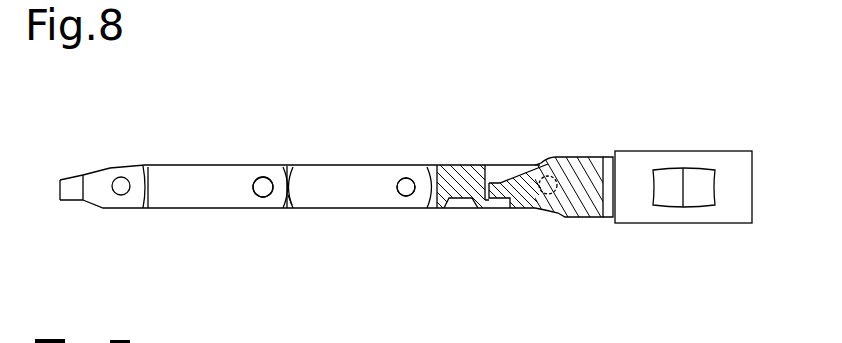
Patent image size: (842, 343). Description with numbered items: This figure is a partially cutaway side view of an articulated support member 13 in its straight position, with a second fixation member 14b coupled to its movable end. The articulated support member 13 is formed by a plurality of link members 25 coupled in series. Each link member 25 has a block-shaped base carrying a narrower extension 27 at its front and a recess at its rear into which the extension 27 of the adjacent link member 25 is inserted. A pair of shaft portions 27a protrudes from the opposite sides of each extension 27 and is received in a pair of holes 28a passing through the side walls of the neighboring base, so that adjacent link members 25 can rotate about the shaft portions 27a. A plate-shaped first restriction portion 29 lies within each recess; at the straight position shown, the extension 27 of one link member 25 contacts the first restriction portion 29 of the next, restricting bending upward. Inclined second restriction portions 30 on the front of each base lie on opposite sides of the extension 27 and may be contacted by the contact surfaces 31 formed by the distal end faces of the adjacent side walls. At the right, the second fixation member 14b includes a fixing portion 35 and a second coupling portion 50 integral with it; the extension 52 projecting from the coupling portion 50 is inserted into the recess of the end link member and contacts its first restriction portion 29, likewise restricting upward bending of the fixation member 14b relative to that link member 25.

The articulated support member 13 is at (165, 166).
The extension 27 is at (97, 171).
The shaft portions 27a is at (121, 186).
The link member 25 is at (213, 165).
The holes 28a is at (266, 180).
The second restriction portions 30 is at (140, 207).
The contact surfaces 31 is at (290, 199).
The first restriction portion 29 is at (488, 209).
The extension 52 is at (522, 182).
The second coupling portion 50 is at (595, 158).
The fixing portion 35 is at (673, 151).
The second fixation member 14b is at (733, 151).